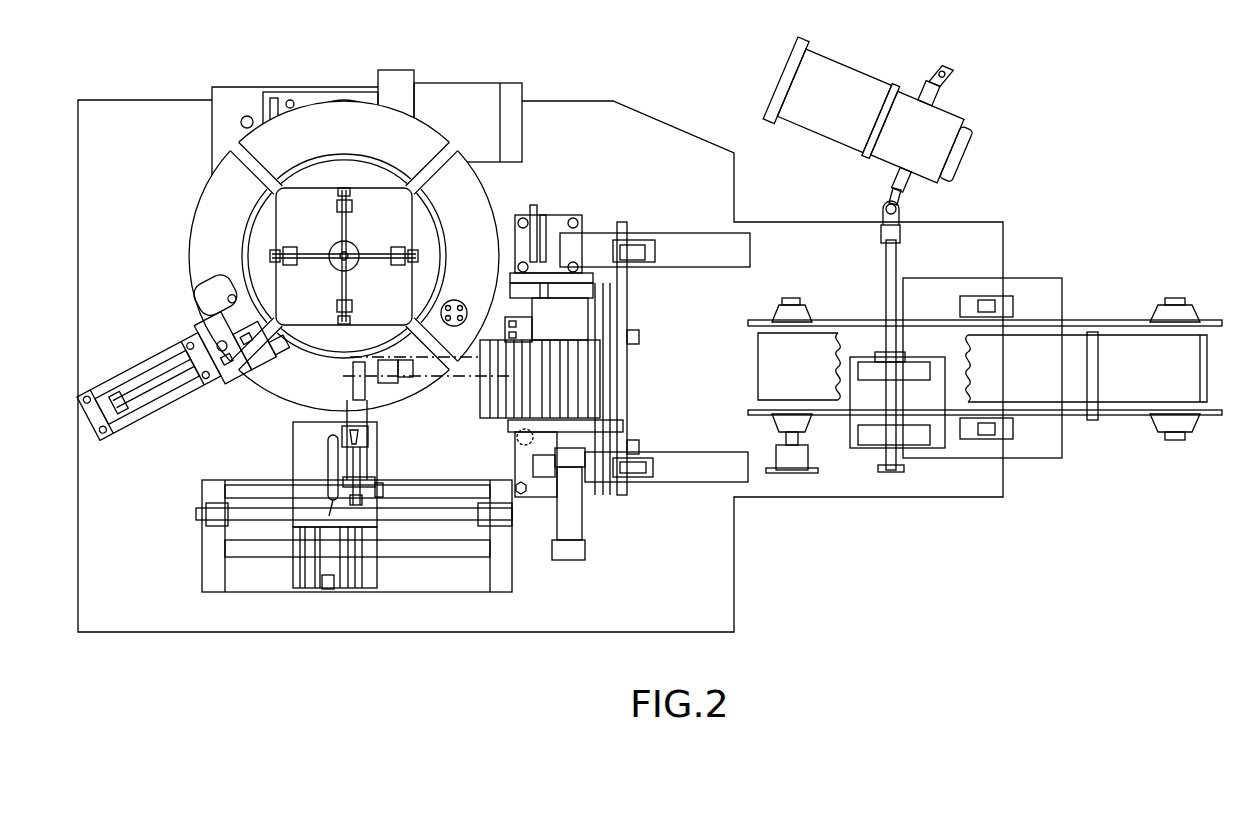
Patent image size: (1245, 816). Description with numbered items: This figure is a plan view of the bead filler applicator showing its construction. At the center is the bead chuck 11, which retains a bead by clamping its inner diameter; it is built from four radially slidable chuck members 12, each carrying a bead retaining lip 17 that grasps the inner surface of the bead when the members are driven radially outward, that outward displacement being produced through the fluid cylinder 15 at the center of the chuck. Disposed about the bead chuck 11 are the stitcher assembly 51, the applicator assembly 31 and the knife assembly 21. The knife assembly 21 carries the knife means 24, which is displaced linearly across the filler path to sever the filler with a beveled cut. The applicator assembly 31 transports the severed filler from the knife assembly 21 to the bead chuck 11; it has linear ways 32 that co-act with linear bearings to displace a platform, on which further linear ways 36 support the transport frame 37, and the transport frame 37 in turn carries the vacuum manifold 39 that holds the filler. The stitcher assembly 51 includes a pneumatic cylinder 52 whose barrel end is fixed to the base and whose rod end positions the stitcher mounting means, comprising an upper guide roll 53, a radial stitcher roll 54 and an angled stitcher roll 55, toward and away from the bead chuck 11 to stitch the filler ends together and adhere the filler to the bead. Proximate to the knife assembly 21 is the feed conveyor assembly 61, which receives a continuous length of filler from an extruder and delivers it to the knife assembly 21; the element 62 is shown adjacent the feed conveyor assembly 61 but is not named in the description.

The bead chuck 11 is at (207, 220).
The chuck member 12 is at (355, 148).
The fluid cylinder 15 is at (353, 247).
The bead retaining lip 17 is at (377, 180).
The knife assembly 21 is at (590, 318).
The knife means 24 is at (507, 330).
The applicator assembly 31 is at (312, 458).
The linear ways 32 is at (252, 545).
The linear ways 36 is at (357, 557).
The transport frame 37 is at (357, 500).
The manifold 39 is at (390, 373).
The stitcher assembly 51 is at (127, 362).
The pneumatic cylinder 52 is at (128, 395).
The upper guide roll 53 is at (278, 350).
The radial stitcher roll 54 is at (257, 345).
The angled stitcher roll 55 is at (213, 293).
The feed conveyor assembly 61 is at (1078, 298).
The discharge cylinder 62 is at (945, 147).